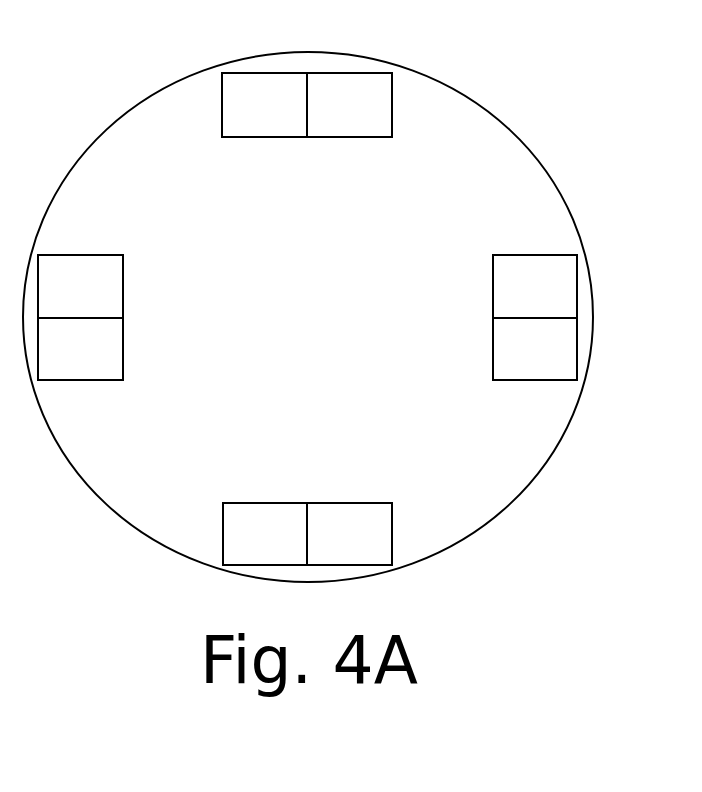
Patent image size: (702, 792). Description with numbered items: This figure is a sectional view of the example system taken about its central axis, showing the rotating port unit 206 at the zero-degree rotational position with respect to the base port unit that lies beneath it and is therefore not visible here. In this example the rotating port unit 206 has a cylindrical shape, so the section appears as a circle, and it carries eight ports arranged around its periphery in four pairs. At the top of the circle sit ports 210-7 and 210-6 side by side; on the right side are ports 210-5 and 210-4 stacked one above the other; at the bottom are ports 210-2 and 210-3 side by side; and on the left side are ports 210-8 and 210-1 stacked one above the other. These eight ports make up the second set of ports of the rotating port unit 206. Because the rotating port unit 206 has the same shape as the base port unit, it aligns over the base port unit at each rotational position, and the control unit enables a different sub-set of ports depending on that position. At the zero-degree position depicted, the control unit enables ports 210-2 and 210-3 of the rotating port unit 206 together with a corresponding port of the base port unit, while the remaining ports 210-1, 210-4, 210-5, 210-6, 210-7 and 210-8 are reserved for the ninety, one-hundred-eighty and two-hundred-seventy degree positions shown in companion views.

The rotating port unit 206 is at (485, 108).
The port 210-1 is at (51, 366).
The port 210-2 is at (235, 551).
The port 210-3 is at (320, 551).
The port 210-4 is at (505, 366).
The port 210-5 is at (505, 304).
The port 210-6 is at (320, 123).
The port 210-7 is at (235, 123).
The port 210-8 is at (51, 304).